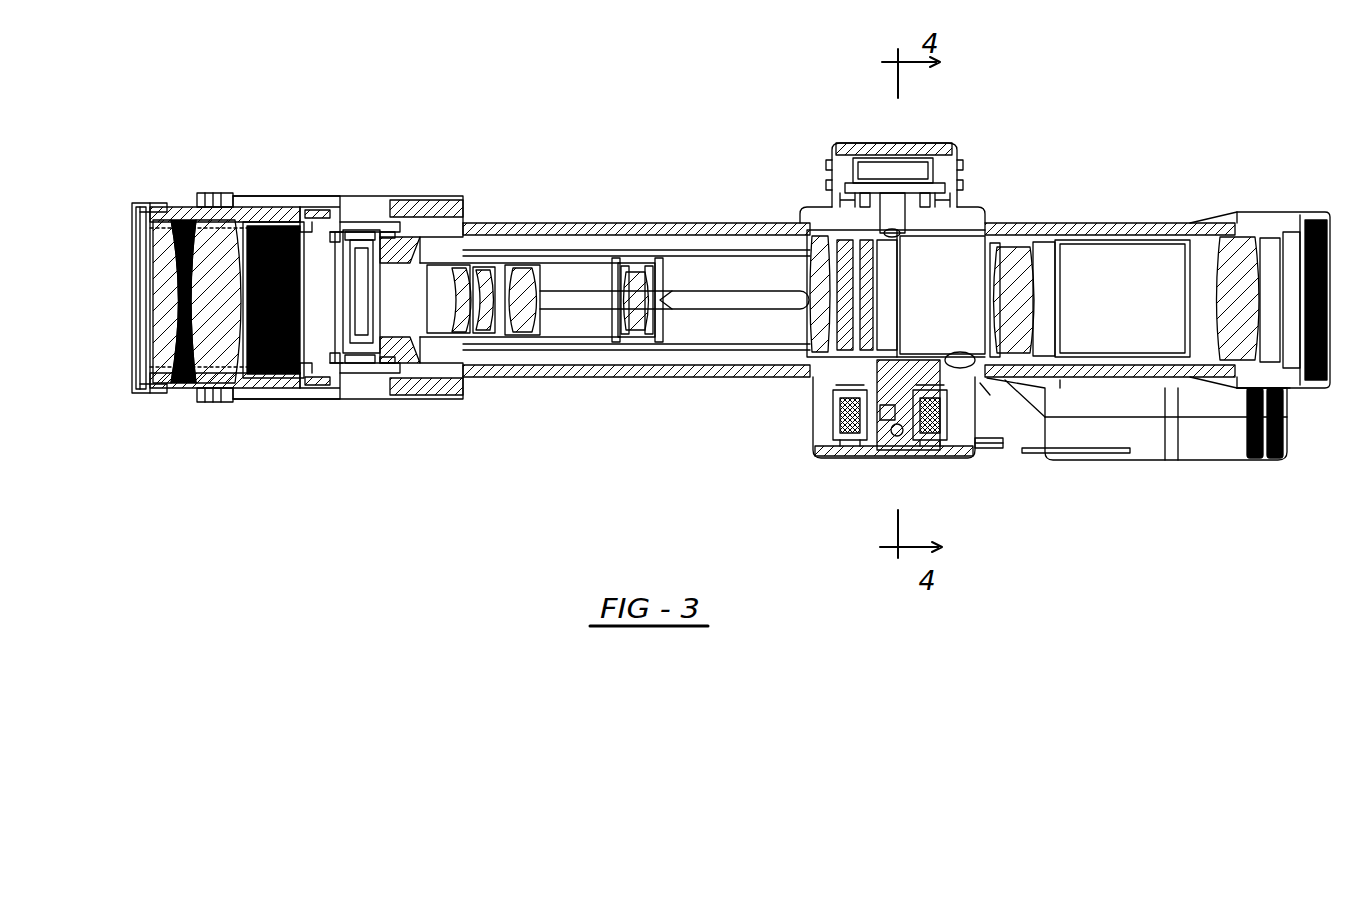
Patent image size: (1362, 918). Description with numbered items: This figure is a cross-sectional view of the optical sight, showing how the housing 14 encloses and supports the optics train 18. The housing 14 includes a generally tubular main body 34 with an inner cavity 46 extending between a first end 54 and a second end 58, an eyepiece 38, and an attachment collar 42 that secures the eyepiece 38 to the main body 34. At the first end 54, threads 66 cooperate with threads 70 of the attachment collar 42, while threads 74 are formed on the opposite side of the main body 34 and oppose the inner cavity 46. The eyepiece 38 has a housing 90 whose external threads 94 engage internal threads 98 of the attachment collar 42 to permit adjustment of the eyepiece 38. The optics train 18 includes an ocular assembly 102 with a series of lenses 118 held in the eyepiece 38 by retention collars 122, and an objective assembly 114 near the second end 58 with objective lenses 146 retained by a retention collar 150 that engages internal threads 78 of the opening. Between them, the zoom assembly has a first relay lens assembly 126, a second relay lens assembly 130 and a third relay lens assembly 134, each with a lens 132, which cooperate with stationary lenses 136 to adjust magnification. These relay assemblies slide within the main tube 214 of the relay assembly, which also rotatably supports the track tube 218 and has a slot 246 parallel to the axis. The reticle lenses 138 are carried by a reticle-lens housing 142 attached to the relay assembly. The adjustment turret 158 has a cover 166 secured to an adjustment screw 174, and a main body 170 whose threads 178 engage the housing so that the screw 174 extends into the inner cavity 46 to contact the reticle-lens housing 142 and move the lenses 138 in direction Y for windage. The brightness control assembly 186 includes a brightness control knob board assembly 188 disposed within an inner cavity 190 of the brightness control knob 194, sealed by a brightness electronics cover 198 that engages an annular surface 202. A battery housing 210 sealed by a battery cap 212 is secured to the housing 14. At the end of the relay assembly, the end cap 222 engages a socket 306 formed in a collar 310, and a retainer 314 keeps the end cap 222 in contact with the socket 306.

The housing 14 is at (745, 200).
The optics train 18 is at (178, 215).
The main body 34 is at (585, 225).
The eyepiece 38 is at (160, 204).
The attachment collar 42 is at (283, 213).
The inner cavity 46 is at (958, 240).
The first end 54 is at (341, 219).
The second end 58 is at (1322, 212).
The threads 66 is at (374, 220).
The threads 70 is at (344, 384).
The threads 74 is at (402, 220).
The internal threads 78 is at (1262, 231).
The housing 90 is at (160, 394).
The external threads 94 is at (272, 216).
The internal threads 98 is at (280, 384).
The ocular assembly 102 is at (185, 392).
The objective assembly 114 is at (1148, 442).
The lenses 118 is at (152, 380).
The retention collars 122 is at (303, 221).
The first relay lens assembly 126 is at (481, 262).
The second relay lens assembly 130 is at (521, 262).
The lens 132 is at (637, 323).
The third relay lens assembly 134 is at (636, 265).
The stationary lenses 136 is at (527, 324).
The reticle lenses 138 is at (897, 302).
The reticle-lens housing 142 is at (863, 338).
The objective lenses 146 is at (1013, 260).
The retention collar 150 is at (1087, 430).
The adjustment turret 158 is at (878, 450).
The cover 166 is at (920, 453).
The main body 170 is at (997, 430).
The adjustment screw 174 is at (905, 370).
The threads 178 is at (1040, 430).
The brightness control assembly 186 is at (922, 128).
The brightness control knob board assembly 188 is at (875, 191).
The inner cavity 190 is at (936, 211).
The brightness control knob 194 is at (950, 192).
The brightness electronics cover 198 is at (840, 165).
The annular surface 202 is at (940, 160).
The battery housing 210 is at (905, 197).
The battery cap 212 is at (1277, 462).
The main tube 214 is at (716, 343).
The track tube 218 is at (684, 351).
The end cap 222 is at (402, 381).
The slot 246 is at (778, 301).
The socket 306 is at (457, 322).
The collar 310 is at (420, 352).
The retainer 314 is at (325, 386).